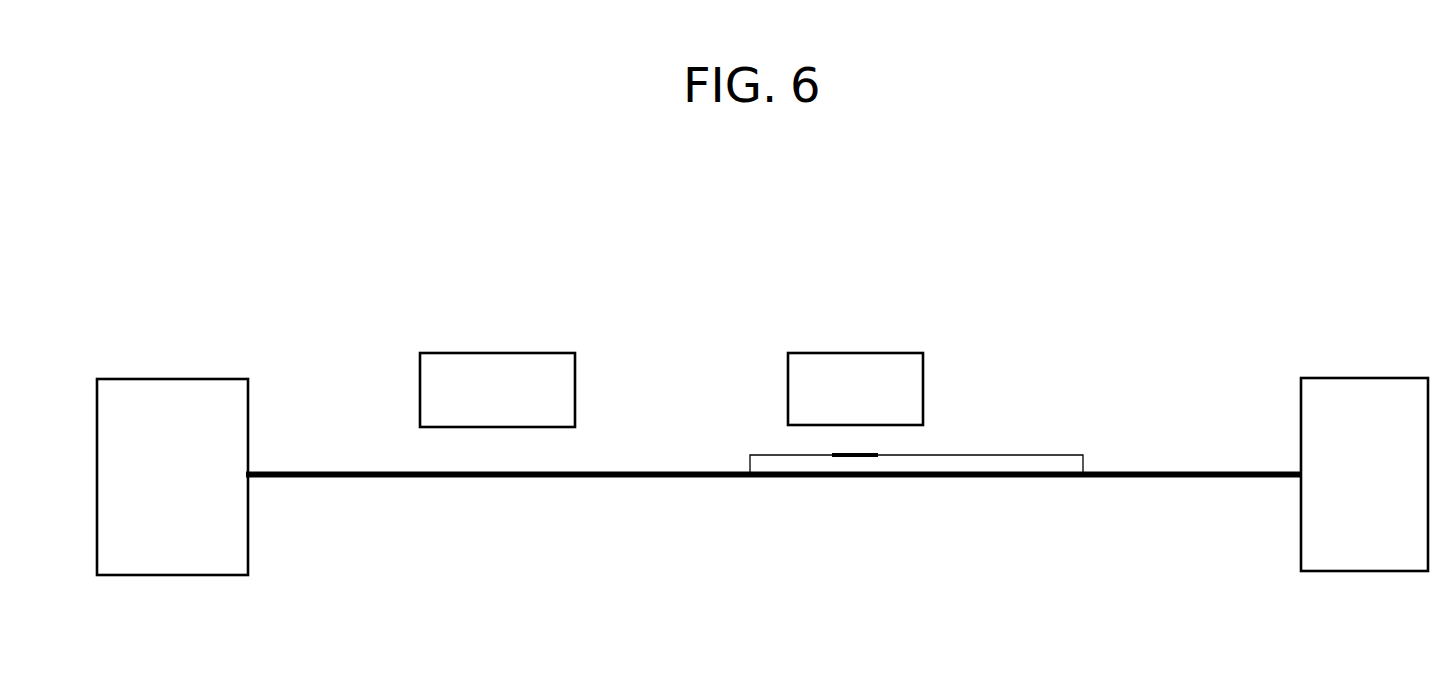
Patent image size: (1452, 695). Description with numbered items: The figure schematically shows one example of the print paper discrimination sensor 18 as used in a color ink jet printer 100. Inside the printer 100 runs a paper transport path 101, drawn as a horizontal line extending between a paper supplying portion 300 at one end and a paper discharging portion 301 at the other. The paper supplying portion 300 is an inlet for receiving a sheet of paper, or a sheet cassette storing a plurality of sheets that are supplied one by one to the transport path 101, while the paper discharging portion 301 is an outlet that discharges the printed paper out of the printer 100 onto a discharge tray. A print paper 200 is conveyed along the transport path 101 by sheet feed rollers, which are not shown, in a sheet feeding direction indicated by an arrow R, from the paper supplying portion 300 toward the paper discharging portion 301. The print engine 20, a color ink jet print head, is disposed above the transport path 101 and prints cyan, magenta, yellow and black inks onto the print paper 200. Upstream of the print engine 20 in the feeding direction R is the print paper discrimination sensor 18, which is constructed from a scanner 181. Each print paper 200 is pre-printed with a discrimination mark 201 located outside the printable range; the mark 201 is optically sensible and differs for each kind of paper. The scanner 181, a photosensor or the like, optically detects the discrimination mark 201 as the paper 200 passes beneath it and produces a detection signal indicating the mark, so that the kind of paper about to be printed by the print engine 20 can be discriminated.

The color ink jet printer 100 is at (1203, 188).
The paper transport path 101 is at (1161, 479).
The paper discharging portion 301 is at (213, 379).
The print engine 20 is at (540, 353).
The print paper discrimination sensor 18 is at (911, 342).
The scanner 181 is at (883, 353).
The print paper 200 is at (1057, 454).
The discrimination mark 201 is at (868, 453).
The sheet feeding direction R is at (913, 507).
The paper supplying portion 300 is at (1388, 378).